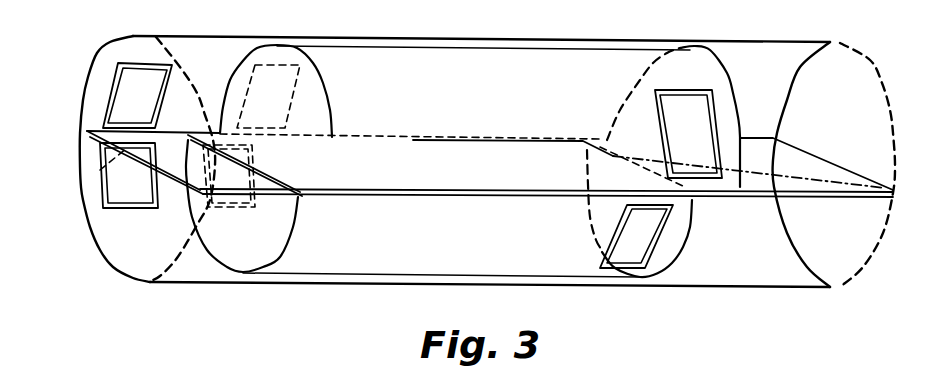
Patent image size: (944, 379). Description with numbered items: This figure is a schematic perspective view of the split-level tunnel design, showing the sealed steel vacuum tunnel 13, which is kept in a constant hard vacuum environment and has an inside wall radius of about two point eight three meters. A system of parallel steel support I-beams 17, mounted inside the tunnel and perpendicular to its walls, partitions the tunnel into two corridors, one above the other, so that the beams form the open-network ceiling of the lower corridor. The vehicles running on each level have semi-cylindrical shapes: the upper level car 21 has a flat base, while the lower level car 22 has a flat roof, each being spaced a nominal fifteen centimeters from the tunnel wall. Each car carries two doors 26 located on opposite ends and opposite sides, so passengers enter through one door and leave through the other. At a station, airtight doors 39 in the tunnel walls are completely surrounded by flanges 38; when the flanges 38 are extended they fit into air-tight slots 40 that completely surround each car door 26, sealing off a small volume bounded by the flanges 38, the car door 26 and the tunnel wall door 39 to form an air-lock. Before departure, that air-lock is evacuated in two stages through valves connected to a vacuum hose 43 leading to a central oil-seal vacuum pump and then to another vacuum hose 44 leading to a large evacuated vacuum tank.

The vacuum tunnel 13 is at (187, 36).
The support I-beams 17 is at (103, 168).
The upper level car 21 is at (724, 79).
The lower level car 22 is at (683, 254).
The car door 26 is at (710, 112).
The flanges 38 is at (112, 72).
The airtight doors in tunnel walls 39 is at (118, 92).
The air-tight slots 40 is at (727, 126).
The vacuum hose 43 is at (88, 131).
The vacuum hose 44 is at (161, 130).